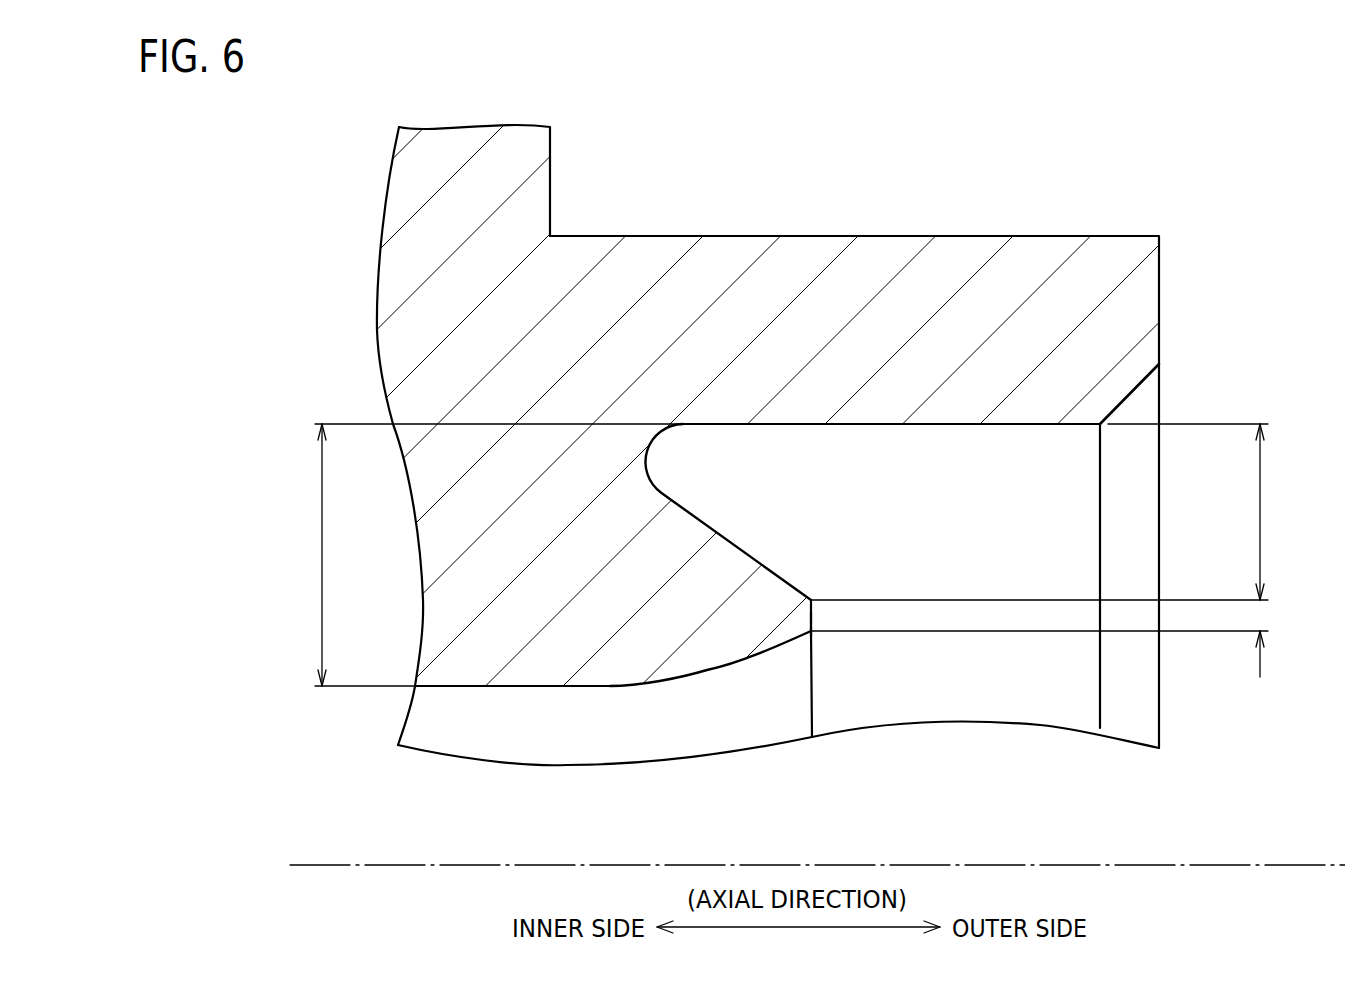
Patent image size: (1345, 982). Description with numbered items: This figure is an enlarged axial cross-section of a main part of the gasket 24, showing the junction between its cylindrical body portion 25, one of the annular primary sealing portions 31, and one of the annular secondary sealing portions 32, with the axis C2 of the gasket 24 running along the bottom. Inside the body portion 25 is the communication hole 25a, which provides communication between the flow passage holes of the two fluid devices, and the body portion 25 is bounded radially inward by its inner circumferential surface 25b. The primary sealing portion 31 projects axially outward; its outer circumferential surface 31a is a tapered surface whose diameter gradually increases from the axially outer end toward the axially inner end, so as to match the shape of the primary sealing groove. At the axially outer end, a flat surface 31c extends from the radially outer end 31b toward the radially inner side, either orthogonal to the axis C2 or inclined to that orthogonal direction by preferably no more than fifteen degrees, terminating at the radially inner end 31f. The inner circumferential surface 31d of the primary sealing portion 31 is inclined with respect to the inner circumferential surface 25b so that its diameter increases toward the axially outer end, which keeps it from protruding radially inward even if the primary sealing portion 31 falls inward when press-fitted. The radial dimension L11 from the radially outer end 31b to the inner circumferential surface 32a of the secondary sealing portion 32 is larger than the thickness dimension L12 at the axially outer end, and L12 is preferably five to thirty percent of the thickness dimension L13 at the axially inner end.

The gasket 24 is at (318, 130).
The body portion 25 is at (468, 145).
The communication hole 25a is at (578, 740).
The inner circumferential surface of the body portion 25b is at (455, 686).
The primary sealing portion 31 is at (767, 602).
The outer circumferential surface 31a is at (696, 517).
The radially outer end 31b is at (812, 595).
The flat surface 31c is at (812, 618).
The inner circumferential surface of the primary sealing portion 31d is at (705, 670).
The radially inner end 31f is at (812, 634).
The secondary sealing portion 32 is at (885, 252).
The inner circumferential surface of the secondary sealing portion 32a is at (945, 424).
The radial dimension L11 is at (1061, 512).
The thickness dimension in the radial direction at the axially outer end L12 is at (1061, 642).
The thickness dimension in the radial direction at the axially inner end L13 is at (475, 555).
The axis C2 is at (1296, 858).